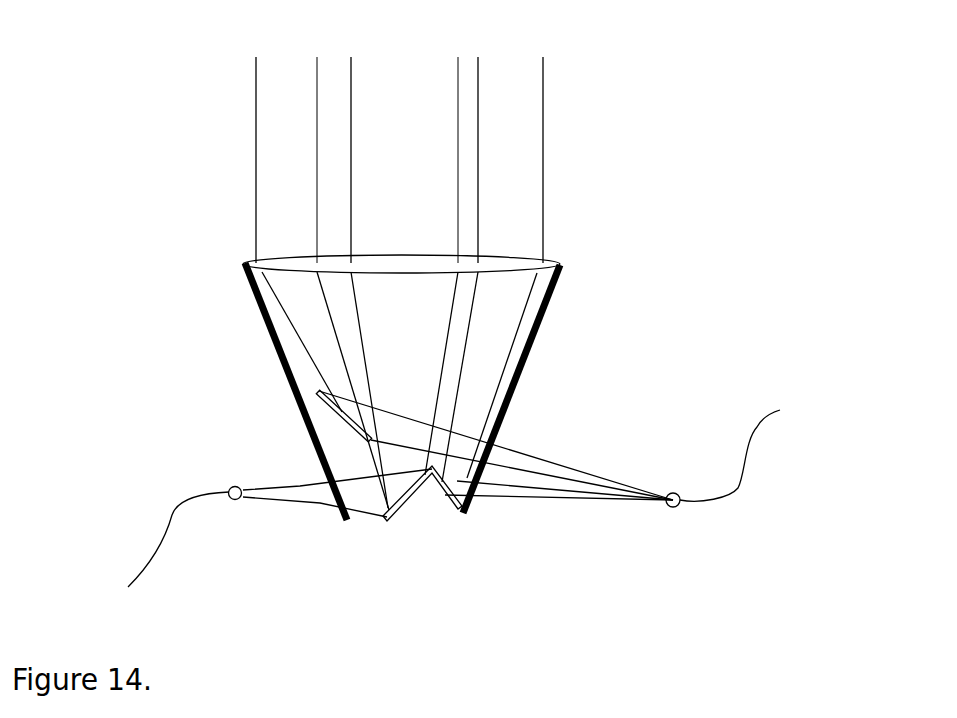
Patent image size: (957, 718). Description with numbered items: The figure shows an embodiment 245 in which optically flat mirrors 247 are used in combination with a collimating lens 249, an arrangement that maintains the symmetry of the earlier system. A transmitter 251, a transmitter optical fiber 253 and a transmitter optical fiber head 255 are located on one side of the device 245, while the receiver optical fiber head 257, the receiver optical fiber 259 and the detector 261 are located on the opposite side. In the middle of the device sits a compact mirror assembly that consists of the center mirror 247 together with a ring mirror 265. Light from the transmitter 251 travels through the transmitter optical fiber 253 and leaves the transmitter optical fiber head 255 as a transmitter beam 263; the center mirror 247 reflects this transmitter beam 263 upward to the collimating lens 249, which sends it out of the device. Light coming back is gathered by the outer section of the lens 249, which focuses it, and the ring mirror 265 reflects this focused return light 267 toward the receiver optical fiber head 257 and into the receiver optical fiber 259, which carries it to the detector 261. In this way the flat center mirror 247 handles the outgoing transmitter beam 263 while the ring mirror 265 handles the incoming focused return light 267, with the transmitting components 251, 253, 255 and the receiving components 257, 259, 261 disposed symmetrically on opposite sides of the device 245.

The embodiment 245 is at (118, 285).
The optically flat mirror 247 is at (410, 518).
The collimating lens 249 is at (548, 253).
The transmitter 251 is at (127, 620).
The transmitter optical fiber 253 is at (158, 548).
The transmitter optical fiber head 255 is at (231, 488).
The receiver optical fiber head 257 is at (677, 510).
The receiver optical fiber 259 is at (742, 483).
The detector 261 is at (845, 390).
The transmitter beam 263 is at (348, 135).
The ring mirror 265 is at (364, 420).
The focused return light 267 is at (543, 128).